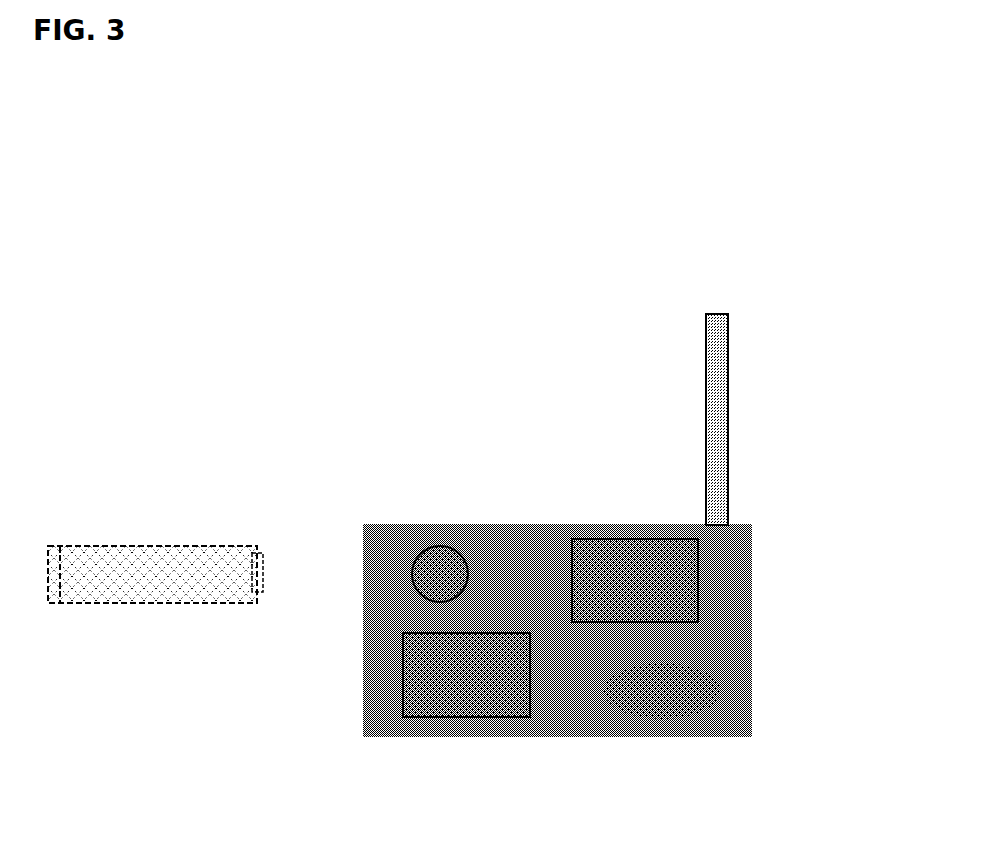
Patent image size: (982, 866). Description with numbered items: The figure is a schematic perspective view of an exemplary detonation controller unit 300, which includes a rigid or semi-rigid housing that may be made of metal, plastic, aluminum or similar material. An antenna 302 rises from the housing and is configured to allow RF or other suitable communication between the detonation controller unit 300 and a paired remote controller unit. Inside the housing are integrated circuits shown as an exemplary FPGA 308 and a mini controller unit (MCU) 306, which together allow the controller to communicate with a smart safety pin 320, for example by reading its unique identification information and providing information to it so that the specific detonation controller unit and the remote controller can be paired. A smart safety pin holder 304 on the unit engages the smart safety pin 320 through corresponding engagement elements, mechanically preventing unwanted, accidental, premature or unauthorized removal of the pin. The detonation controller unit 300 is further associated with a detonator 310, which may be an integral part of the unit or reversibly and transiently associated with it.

The detonation controller unit 300 is at (445, 315).
The antenna 302 is at (764, 337).
The smart safety pin holder 304 is at (428, 552).
The mini controller unit (MCU) 306 is at (435, 708).
The FPGA 308 is at (635, 525).
The detonator 310 is at (662, 720).
The smart safety pin 320 is at (140, 525).